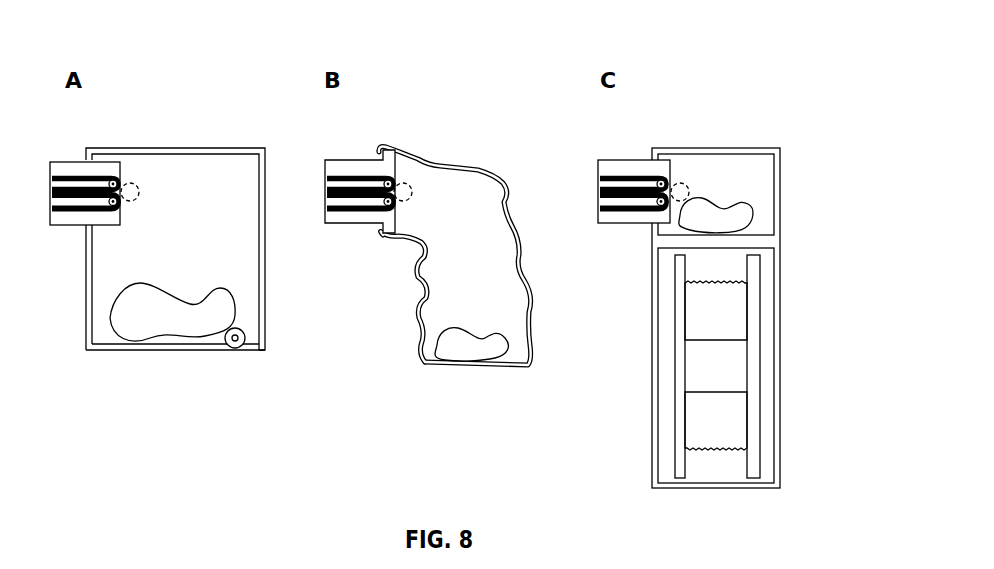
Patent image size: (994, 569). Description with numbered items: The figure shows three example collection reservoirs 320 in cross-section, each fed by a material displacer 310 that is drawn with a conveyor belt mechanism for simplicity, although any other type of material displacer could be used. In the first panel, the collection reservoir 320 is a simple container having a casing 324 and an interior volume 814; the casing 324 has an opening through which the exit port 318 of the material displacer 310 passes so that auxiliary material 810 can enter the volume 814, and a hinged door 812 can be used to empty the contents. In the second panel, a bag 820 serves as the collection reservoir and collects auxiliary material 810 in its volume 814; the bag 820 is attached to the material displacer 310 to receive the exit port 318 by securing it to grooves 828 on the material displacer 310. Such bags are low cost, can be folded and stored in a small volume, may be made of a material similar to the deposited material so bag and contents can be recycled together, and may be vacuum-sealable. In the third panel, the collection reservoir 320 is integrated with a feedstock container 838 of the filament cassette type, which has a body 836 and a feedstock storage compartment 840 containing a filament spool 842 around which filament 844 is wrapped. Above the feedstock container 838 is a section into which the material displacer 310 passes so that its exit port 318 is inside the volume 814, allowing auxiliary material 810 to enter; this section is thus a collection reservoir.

In FIG. 8A, the material displacer 310 is at (68, 222).
In FIG. 8B, the material displacer 310 is at (360, 220).
In FIG. 8C, the material displacer 310 is at (630, 225).
In FIG. 8A, the exit port 318 is at (132, 180).
In FIG. 8B, the exit port 318 is at (407, 182).
In FIG. 8C, the exit port 318 is at (678, 180).
In FIG. 8A, the collection reservoir 320 is at (98, 409).
In FIG. 8B, the collection reservoir 320 is at (386, 417).
In FIG. 8C, the collection reservoir 320 is at (805, 93).
In FIG. 8A, the casing 324 is at (87, 273).
In FIG. 8A, the auxiliary material 810 is at (120, 310).
In FIG. 8B, the auxiliary material 810 is at (450, 338).
In FIG. 8C, the auxiliary material 810 is at (742, 210).
In FIG. 8A, the hinged door 812 is at (182, 348).
In FIG. 8A, the interior volume 814 is at (208, 165).
In FIG. 8B, the interior volume 814 is at (442, 248).
In FIG. 8C, the interior volume 814 is at (765, 172).
In FIG. 8B, the bag 820 is at (417, 298).
In FIG. 8B, the grooves 828 is at (385, 240).
In FIG. 8C, the body 836 is at (657, 298).
In FIG. 8C, the feedstock container 838 is at (848, 371).
In FIG. 8C, the feedstock storage compartment 840 is at (763, 307).
In FIG. 8C, the filament spool 842 is at (755, 352).
In FIG. 8C, the filament 844 is at (737, 425).